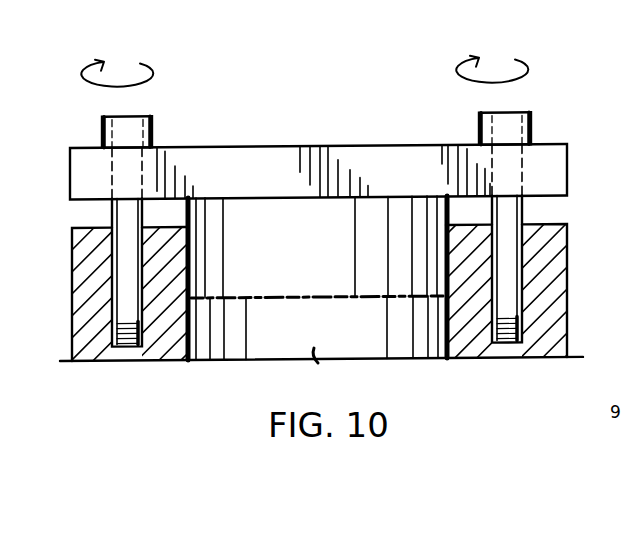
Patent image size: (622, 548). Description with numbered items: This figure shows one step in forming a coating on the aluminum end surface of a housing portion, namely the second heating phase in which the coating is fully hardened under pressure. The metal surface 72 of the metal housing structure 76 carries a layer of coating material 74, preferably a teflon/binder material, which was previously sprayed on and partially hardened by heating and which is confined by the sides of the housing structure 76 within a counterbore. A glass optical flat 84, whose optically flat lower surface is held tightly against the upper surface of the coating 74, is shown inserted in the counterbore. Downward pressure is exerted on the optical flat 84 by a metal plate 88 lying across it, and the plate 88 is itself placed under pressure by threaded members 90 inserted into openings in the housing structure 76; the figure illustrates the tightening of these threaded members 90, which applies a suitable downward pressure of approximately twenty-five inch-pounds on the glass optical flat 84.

The metal surface 72 is at (297, 300).
The layer of coating material 74 is at (310, 300).
The metal housing structure 76 is at (553, 283).
The optical flat 84 is at (323, 215).
The metal plate 88 is at (406, 165).
The threaded members 90 is at (130, 219).